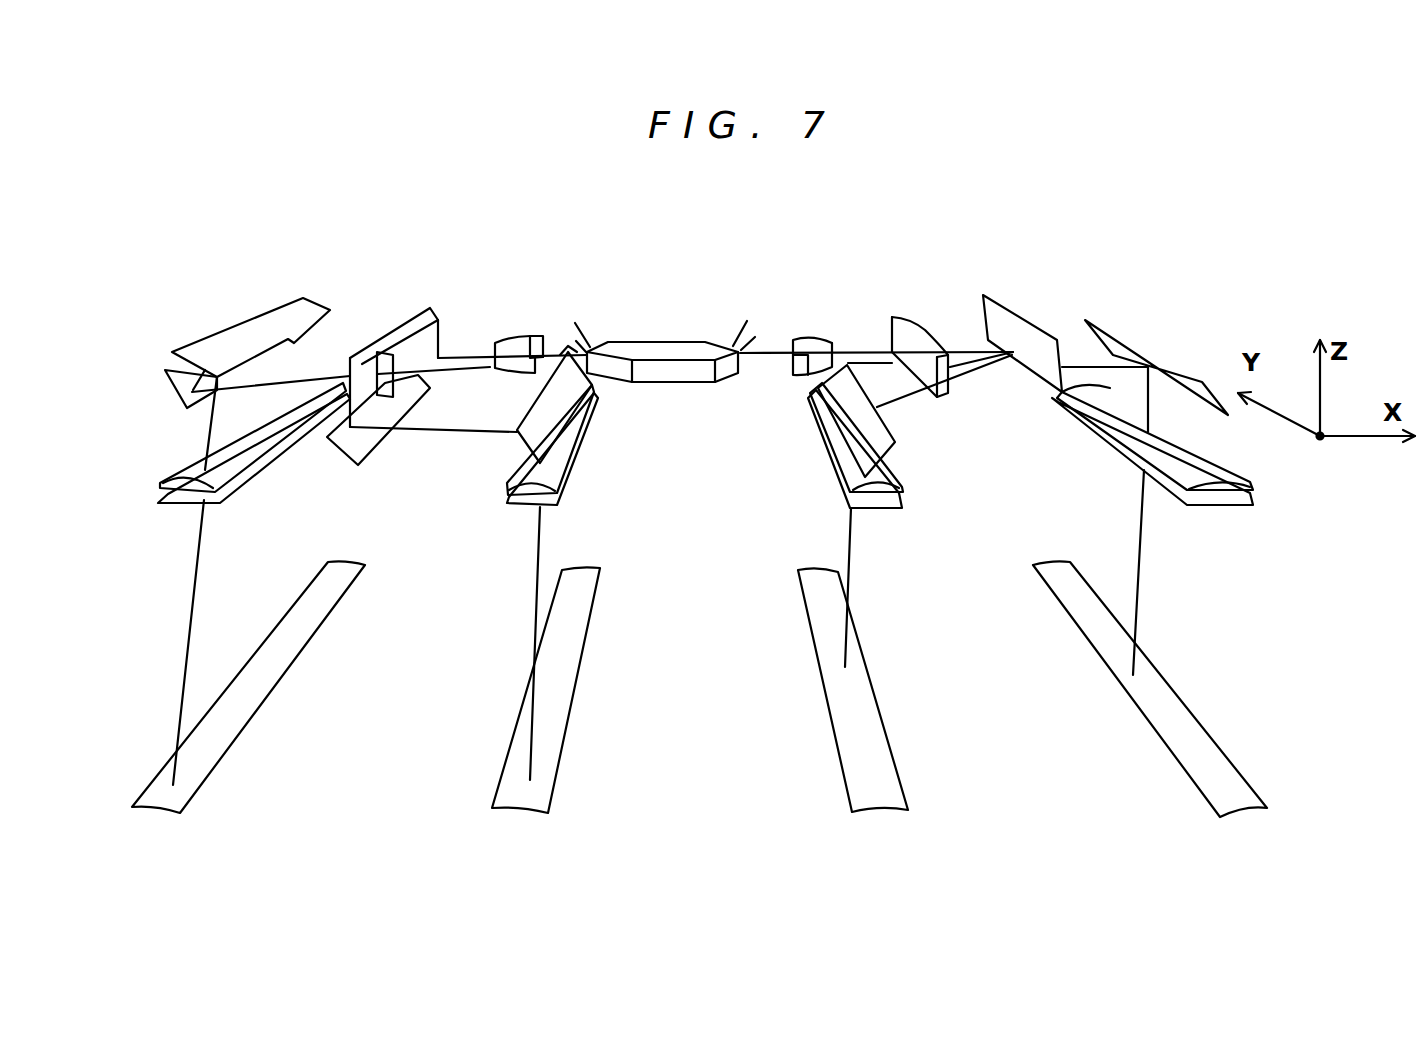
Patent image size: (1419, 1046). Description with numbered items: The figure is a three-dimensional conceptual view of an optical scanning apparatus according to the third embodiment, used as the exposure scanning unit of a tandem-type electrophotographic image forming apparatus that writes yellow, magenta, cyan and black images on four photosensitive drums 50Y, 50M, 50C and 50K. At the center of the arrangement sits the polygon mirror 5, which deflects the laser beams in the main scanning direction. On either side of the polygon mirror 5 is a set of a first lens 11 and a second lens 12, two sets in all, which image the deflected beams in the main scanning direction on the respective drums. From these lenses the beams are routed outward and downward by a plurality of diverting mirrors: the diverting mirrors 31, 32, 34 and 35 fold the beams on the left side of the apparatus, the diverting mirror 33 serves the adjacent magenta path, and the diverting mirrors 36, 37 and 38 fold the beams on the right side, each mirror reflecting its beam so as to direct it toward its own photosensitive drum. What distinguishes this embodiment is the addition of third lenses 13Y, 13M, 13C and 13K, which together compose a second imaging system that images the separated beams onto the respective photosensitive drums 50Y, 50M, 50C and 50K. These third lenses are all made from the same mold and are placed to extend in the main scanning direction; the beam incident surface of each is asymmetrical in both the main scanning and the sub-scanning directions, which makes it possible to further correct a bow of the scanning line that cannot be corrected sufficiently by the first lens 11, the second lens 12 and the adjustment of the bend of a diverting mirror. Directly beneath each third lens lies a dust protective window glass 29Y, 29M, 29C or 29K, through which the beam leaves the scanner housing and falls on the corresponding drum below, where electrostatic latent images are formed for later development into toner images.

The polygon mirror 5 is at (657, 342).
The first lens 11 is at (512, 336).
The second lens 12 is at (432, 314).
The third lens 13Y is at (187, 464).
The third lens 13M is at (505, 468).
The third lens 13C is at (902, 470).
The third lens 13K is at (1210, 458).
The dust protective window glass 29Y is at (275, 458).
The dust protective window glass 29M is at (568, 477).
The dust protective window glass 29C is at (820, 436).
The dust protective window glass 29K is at (1098, 435).
The diverting mirror 31 is at (385, 328).
The diverting mirror 32 is at (365, 450).
The diverting mirror 33 is at (550, 430).
The diverting mirror 34 is at (232, 337).
The diverting mirror 35 is at (177, 395).
The diverting mirror 36 is at (1172, 363).
The diverting mirror 37 is at (1030, 318).
The diverting mirror 38 is at (888, 425).
The photosensitive drum 50Y is at (203, 757).
The photosensitive drum 50M is at (547, 758).
The photosensitive drum 50C is at (875, 763).
The photosensitive drum 50K is at (1172, 703).